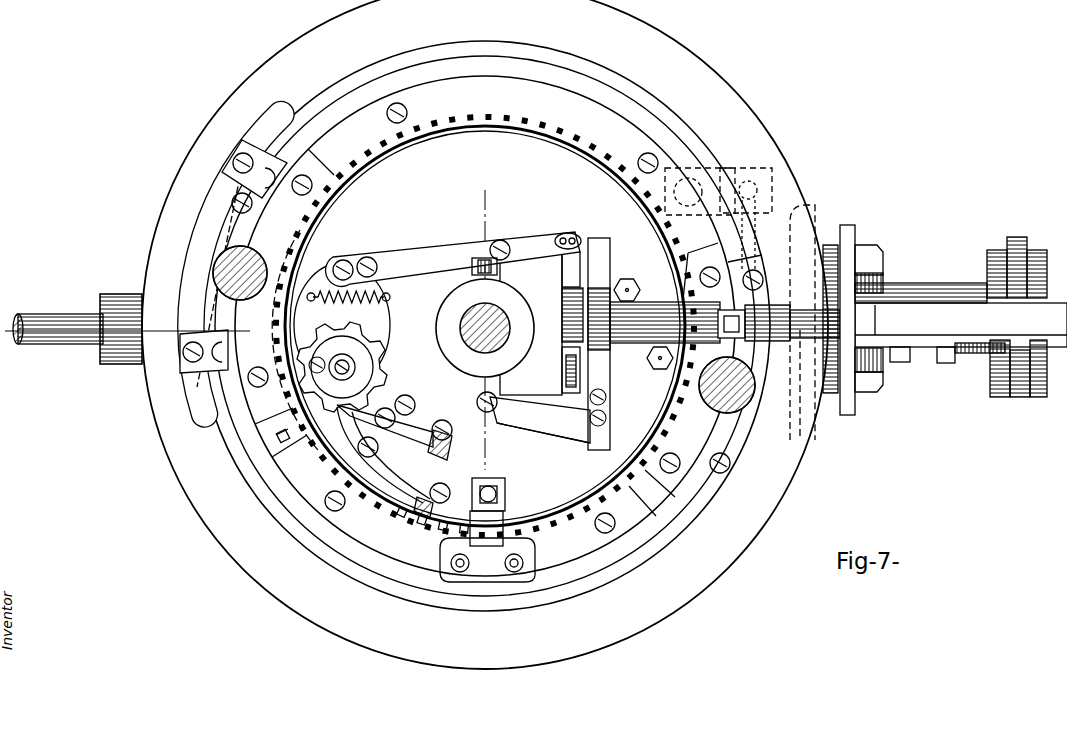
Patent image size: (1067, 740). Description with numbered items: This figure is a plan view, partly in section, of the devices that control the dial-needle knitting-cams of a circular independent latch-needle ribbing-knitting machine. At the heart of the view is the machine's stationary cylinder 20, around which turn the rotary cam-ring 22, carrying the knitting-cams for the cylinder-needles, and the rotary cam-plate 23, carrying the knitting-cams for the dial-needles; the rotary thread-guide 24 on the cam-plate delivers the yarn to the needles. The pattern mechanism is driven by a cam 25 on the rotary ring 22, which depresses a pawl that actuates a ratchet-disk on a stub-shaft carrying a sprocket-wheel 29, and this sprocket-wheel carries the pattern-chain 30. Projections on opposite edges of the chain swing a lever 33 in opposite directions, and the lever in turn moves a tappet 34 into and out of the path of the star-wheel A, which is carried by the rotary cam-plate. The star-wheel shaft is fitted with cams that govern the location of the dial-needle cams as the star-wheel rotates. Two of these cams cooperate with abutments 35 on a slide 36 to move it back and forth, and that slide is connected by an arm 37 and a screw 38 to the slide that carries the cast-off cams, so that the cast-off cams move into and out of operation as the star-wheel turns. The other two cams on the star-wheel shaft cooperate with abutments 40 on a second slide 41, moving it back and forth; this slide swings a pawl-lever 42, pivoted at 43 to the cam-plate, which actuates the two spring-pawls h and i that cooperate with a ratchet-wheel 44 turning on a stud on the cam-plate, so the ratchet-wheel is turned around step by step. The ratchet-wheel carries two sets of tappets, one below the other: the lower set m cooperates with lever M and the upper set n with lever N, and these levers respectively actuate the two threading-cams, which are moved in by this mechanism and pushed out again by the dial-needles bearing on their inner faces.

The stationary cylinder 20 is at (530, 120).
The rotary cam-ring 22 is at (485, 326).
The rotary cam-plate 23 is at (485, 326).
The rotary thread-guide 24 is at (520, 536).
The cam 25 is at (205, 209).
The sprocket-wheel 29 is at (1040, 248).
The pattern-chain 30 is at (1000, 248).
The lever 33 is at (978, 355).
The tappet 34 is at (926, 342).
The abutments 35 is at (606, 270).
The slide 36 is at (607, 242).
The arm 37 is at (553, 418).
The screw 38 is at (493, 400).
The abutments 40 is at (567, 270).
The slide 41 is at (577, 233).
The pawl-lever 42 is at (445, 245).
The pivot 43 is at (503, 242).
The ratchet-wheel 44 is at (363, 367).
The spring-pawl h is at (395, 321).
The spring-pawl i is at (318, 285).
The tappets m is at (342, 356).
The tappets n is at (329, 375).
The lever N is at (418, 430).
The lever M is at (418, 482).
The star-wheel A is at (855, 405).